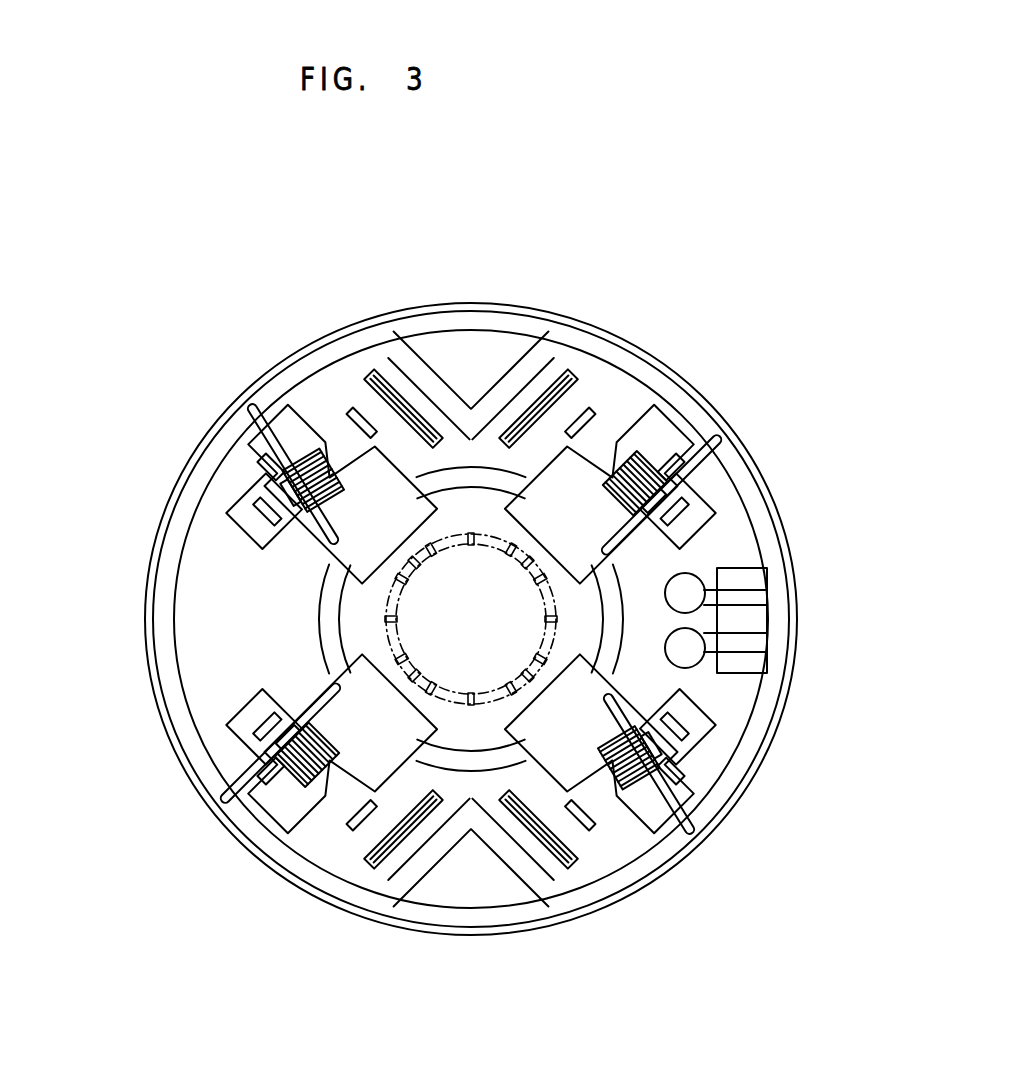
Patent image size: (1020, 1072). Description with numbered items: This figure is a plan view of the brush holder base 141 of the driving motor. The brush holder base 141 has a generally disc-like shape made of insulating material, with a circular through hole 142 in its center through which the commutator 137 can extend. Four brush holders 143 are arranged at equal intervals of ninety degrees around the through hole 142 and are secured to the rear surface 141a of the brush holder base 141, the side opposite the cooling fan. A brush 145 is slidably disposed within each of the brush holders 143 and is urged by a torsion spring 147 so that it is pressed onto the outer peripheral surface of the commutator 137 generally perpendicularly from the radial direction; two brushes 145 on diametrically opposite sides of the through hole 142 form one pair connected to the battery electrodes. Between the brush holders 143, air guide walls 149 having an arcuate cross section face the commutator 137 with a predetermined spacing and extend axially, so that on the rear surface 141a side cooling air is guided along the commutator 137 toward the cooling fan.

The commutator 137 is at (385, 628).
The brush holder base 141 is at (518, 300).
The rear surface 141a is at (437, 352).
The through hole 142 is at (480, 647).
The brush holder 143 is at (666, 407).
The brush 145 is at (405, 548).
The actuator coil 147 is at (285, 497).
The air guide wall 149 is at (323, 618).